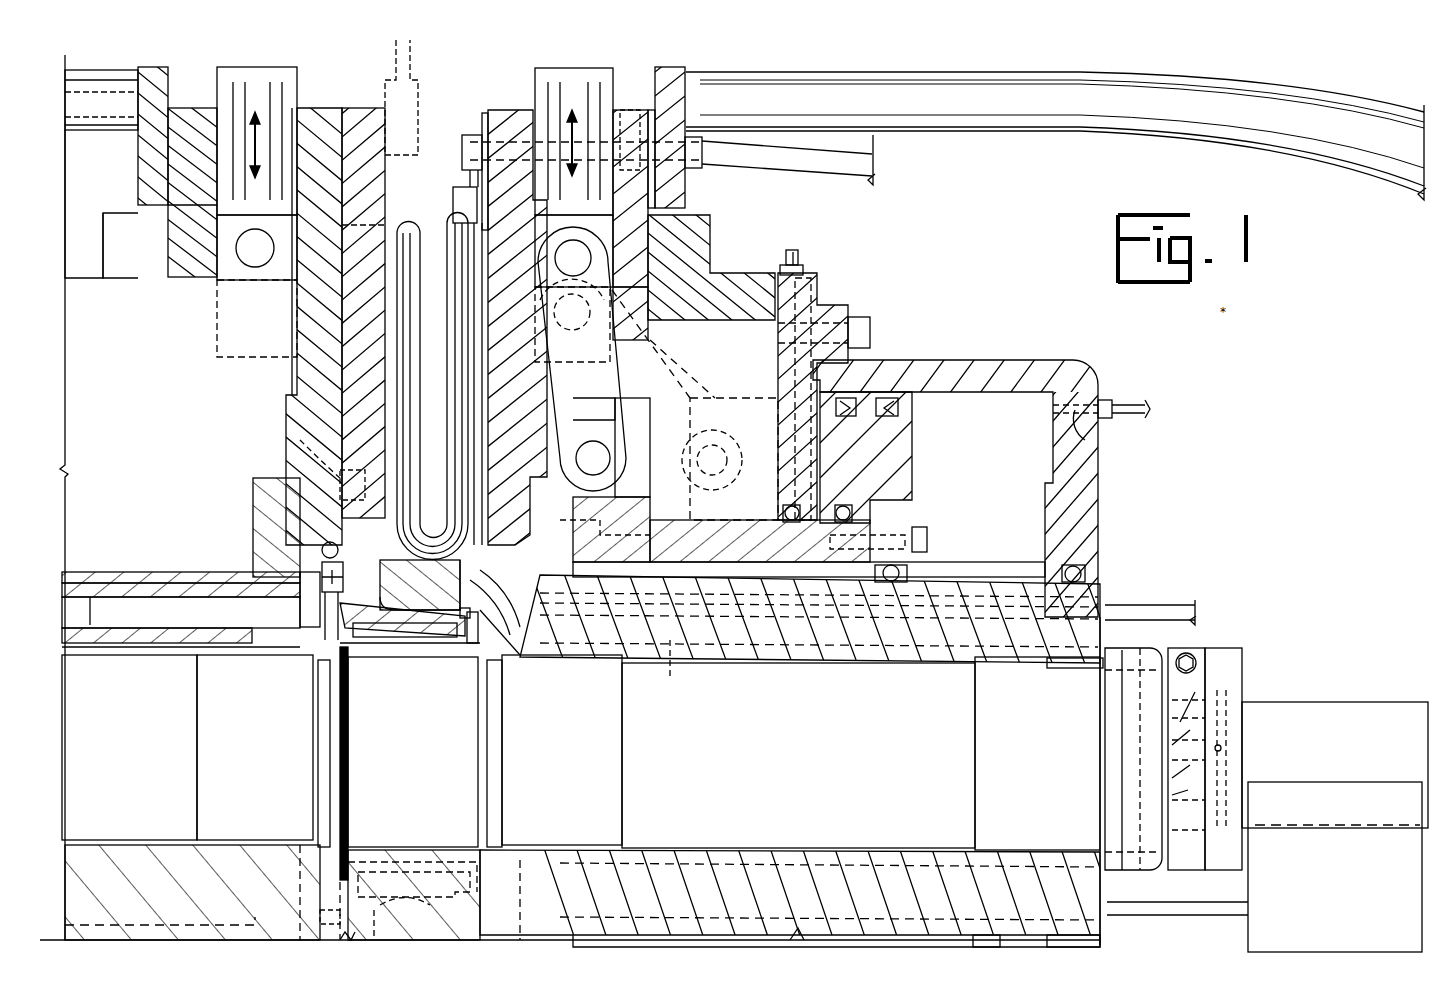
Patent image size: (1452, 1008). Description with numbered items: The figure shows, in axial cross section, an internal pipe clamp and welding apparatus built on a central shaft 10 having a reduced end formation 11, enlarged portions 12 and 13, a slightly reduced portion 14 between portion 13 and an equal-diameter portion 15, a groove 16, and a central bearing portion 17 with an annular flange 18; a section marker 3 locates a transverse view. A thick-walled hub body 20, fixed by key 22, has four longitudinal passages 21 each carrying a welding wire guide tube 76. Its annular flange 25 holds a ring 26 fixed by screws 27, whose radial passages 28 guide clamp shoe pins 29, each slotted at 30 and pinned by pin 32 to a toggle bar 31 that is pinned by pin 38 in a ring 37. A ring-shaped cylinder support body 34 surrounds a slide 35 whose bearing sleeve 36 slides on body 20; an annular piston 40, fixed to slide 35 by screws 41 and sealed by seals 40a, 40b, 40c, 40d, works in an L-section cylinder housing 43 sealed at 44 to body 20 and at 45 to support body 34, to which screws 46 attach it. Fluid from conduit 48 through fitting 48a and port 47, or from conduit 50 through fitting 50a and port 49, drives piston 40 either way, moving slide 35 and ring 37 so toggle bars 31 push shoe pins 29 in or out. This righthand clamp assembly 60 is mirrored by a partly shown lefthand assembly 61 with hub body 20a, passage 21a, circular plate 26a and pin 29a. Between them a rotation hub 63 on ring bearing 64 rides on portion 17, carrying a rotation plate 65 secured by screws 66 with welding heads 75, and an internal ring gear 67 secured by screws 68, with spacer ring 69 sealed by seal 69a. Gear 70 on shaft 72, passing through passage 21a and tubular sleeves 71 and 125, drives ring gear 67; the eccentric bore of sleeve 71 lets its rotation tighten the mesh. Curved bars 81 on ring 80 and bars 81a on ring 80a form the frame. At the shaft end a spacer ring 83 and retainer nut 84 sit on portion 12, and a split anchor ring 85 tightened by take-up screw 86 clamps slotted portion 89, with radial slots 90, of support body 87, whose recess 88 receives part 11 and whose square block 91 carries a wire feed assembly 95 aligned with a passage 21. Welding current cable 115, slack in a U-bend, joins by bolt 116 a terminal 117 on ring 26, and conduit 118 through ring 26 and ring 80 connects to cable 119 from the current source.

The section line 3 is at (470, 50).
The central shaft 10 is at (925, 640).
The reduced cylindrical formation 11 is at (1222, 680).
The enlarged portion 12 is at (1135, 665).
The further enlarged portion 13 is at (1038, 772).
The slightly reduced portion 14 is at (125, 764).
The shaft portion 15 is at (263, 764).
The groove 16 is at (315, 792).
The central bearing portion 17 is at (424, 764).
The annular flange 18 is at (349, 795).
The tubular hub body 20 is at (1015, 578).
The body 20a is at (174, 572).
The longitudinal passages 21 is at (805, 640).
The passage 21a is at (108, 580).
The key 22 is at (1068, 666).
The annular flange 25 is at (578, 408).
The ring 26 is at (488, 440).
The circular plate 26a is at (318, 108).
The screws 27 is at (490, 562).
The radial passages 28 is at (612, 253).
The clamp shoe pin 29 is at (582, 66).
The cylinder 29a is at (252, 67).
The slot 30 is at (600, 232).
The toggle bar 31 is at (620, 374).
The pin 32 is at (584, 267).
The cylinder support body 34 is at (775, 286).
The slide element 35 is at (737, 534).
The bearing sleeve 36 is at (702, 570).
The ring 37 is at (650, 418).
The pin 38 is at (604, 467).
The annular piston 40 is at (912, 462).
The seal 40a is at (910, 545).
The seal 40b is at (853, 512).
The seal 40c is at (867, 416).
The seal 40d is at (858, 416).
The screws 41 is at (927, 540).
The cylinder housing 43 is at (993, 363).
The seal 44 is at (1081, 570).
The seal 45 is at (796, 382).
The screws 46 is at (872, 333).
The port 47 is at (818, 286).
The conduit 48 is at (800, 255).
The fitting 48a is at (783, 264).
The port 49 is at (1092, 440).
The conduit 50 is at (1135, 400).
The fitting 50a is at (1098, 379).
The clamp assembly 60 is at (870, 273).
The clamp assembly 61 is at (102, 195).
The rotation hub 63 is at (410, 515).
The ring shaped bearing 64 is at (388, 646).
The rotation plate 65 is at (385, 182).
The screws 66 is at (298, 444).
The ring gear 67 is at (355, 572).
The screws 68 is at (325, 572).
The spacer ring 69 is at (512, 660).
The seal 69a is at (462, 608).
The circular gear 70 is at (305, 655).
The tubular sleeve 71 is at (126, 632).
The shaft 72 is at (88, 650).
The welding head 75 is at (416, 112).
The welding wire guide tube 76 is at (666, 674).
The circular ring 80 is at (685, 188).
The ring 80a is at (156, 226).
The bars 81 is at (956, 134).
The bars 81a is at (98, 74).
The spacer ring 83 is at (1119, 614).
The threaded retainer nut 84 is at (1138, 646).
The anchor ring 85 is at (1197, 648).
The take up screw 86 is at (1196, 660).
The support body 87 is at (1242, 688).
The circular recess 88 is at (1220, 748).
The slotted portion 89 is at (1185, 720).
The radial slots 90 is at (1172, 790).
The extending part 91 is at (1332, 700).
The wire feed assembly 95 is at (1350, 782).
The welding current cable 115 is at (454, 222).
The bolt 116 is at (461, 160).
The terminal 117 is at (478, 126).
The conduit 118 is at (628, 120).
The cable 119 is at (834, 170).
The tubular sleeve 125 is at (190, 588).